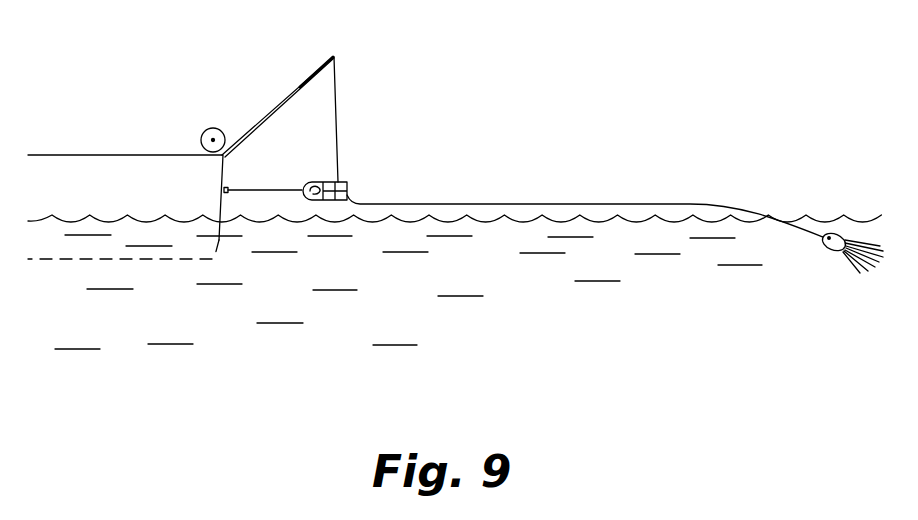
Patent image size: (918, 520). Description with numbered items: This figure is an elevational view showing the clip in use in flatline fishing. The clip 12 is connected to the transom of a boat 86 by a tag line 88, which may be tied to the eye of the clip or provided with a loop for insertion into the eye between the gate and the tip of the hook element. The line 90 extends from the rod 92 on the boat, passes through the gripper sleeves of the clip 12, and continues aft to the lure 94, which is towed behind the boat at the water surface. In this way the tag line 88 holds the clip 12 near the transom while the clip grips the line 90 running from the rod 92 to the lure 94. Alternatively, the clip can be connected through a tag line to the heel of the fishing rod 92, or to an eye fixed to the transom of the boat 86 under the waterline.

The boat 86 is at (158, 155).
The rod 92 is at (292, 93).
The line 90 is at (338, 102).
The tag line 88 is at (250, 190).
The clip 12 is at (348, 183).
The lure 94 is at (826, 252).